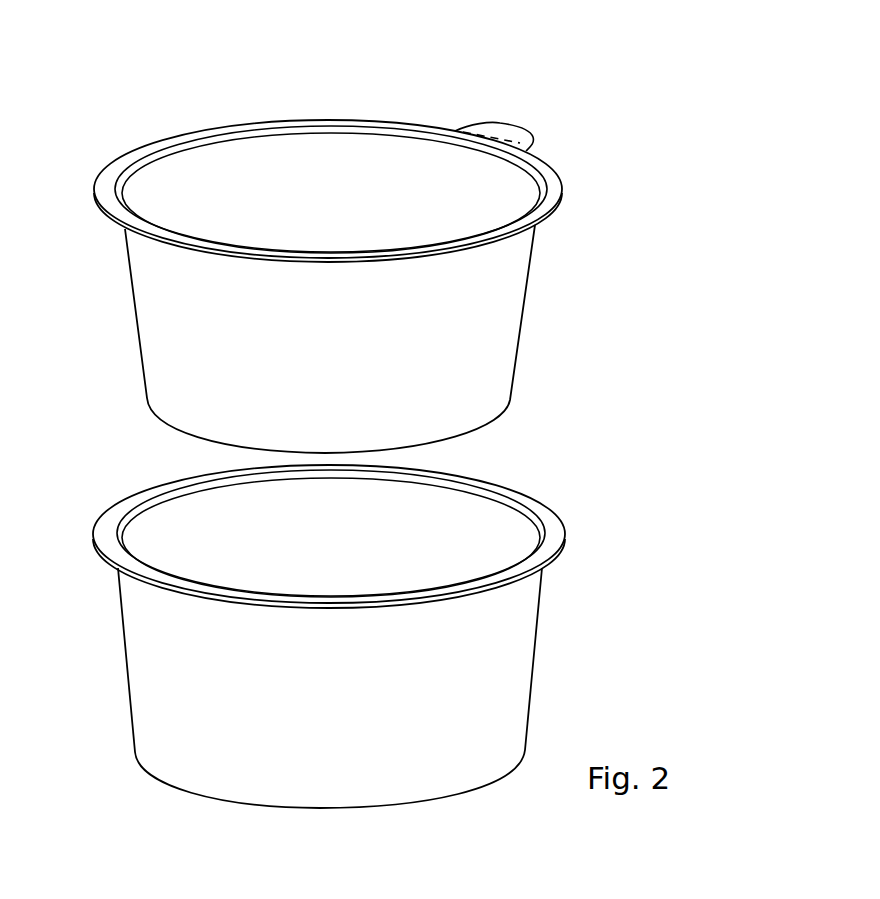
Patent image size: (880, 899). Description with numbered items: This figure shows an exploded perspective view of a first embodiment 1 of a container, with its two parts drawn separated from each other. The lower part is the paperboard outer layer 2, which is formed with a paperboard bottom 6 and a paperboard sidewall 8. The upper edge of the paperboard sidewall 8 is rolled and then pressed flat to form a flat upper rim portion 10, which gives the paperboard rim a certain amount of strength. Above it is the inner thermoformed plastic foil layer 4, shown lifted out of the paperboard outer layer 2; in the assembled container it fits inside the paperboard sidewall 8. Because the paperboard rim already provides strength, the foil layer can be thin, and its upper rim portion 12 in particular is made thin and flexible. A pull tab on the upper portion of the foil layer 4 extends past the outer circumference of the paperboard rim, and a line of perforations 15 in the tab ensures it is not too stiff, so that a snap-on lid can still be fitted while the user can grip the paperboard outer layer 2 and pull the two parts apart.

The first embodiment of a container 1 is at (547, 74).
The paperboard outer layer 2 is at (598, 628).
The inner thermoformed plastic foil layer 4 is at (566, 293).
The paperboard bottom 6 is at (487, 778).
The paperboard sidewall 8 is at (162, 648).
The rolled upper edge / flat upper rim portion 10 is at (562, 528).
The upper rim portion of the foil layer 12 is at (558, 186).
The line of perforations 15 is at (503, 136).